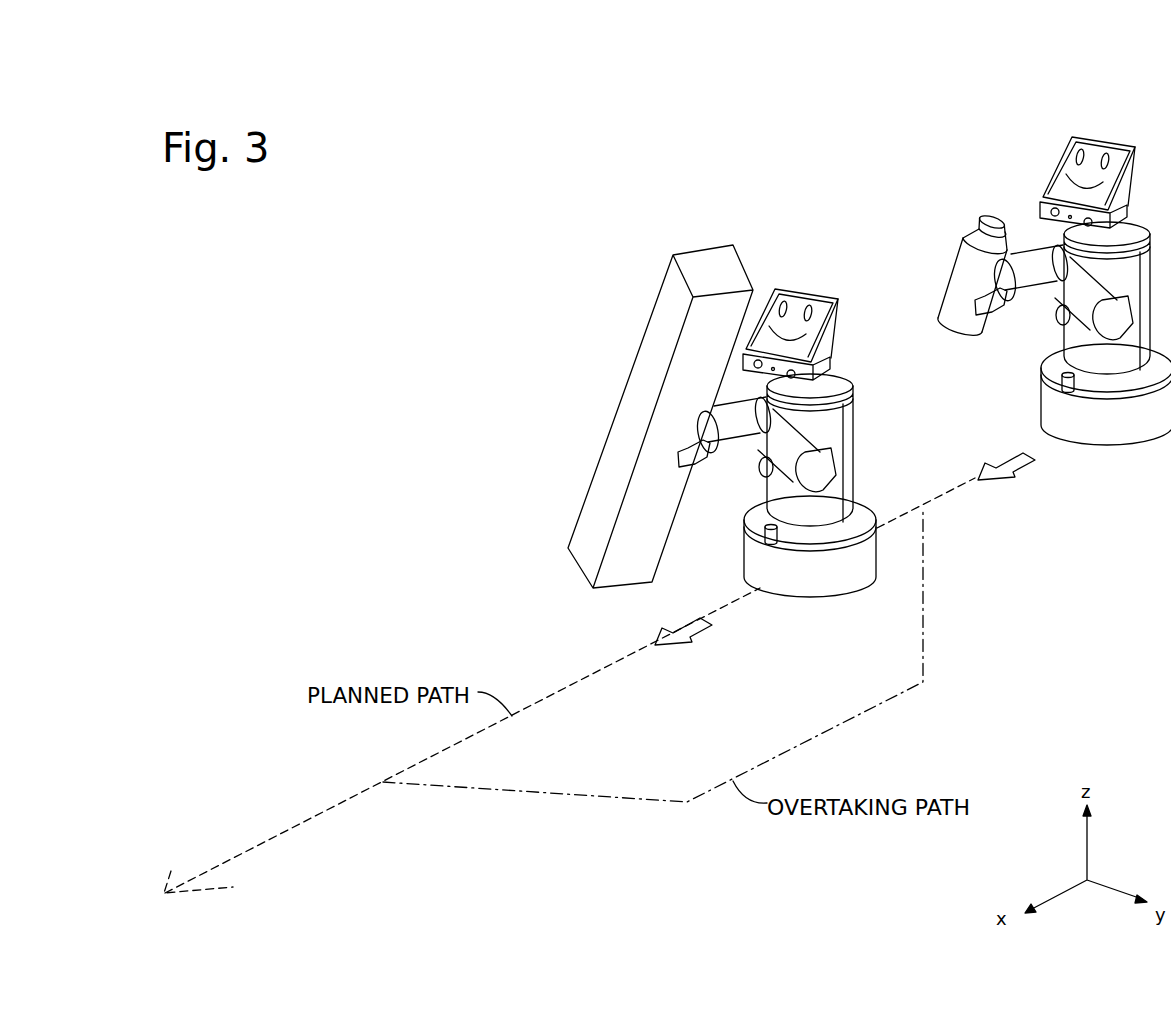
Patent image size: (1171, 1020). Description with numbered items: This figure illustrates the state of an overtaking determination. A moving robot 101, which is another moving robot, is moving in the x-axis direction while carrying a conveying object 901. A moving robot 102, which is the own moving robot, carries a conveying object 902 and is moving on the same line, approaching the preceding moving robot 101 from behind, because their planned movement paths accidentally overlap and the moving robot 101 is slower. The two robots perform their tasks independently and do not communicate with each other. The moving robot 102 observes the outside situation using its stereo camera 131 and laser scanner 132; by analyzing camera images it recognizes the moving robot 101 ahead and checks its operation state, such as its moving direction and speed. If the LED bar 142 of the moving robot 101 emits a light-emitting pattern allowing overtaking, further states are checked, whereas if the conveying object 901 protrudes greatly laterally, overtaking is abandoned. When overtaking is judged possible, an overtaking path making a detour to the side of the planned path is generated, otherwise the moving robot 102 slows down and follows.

The moving robot 101 is at (801, 358).
The moving robot 102 is at (1067, 222).
The stereo camera 131 is at (1040, 210).
The laser scanner 132 is at (1062, 385).
The LED bar 142 is at (846, 400).
The conveying object 901 is at (660, 310).
The conveying object 902 is at (963, 276).